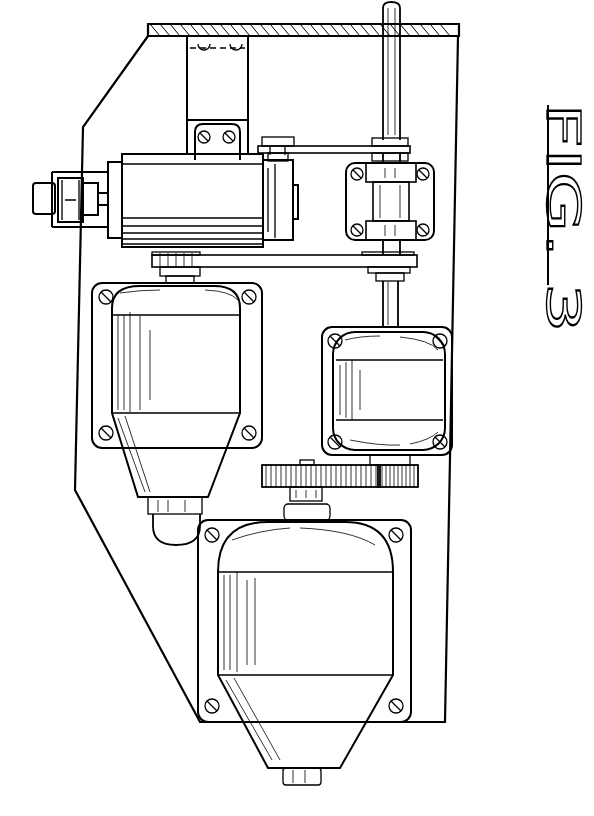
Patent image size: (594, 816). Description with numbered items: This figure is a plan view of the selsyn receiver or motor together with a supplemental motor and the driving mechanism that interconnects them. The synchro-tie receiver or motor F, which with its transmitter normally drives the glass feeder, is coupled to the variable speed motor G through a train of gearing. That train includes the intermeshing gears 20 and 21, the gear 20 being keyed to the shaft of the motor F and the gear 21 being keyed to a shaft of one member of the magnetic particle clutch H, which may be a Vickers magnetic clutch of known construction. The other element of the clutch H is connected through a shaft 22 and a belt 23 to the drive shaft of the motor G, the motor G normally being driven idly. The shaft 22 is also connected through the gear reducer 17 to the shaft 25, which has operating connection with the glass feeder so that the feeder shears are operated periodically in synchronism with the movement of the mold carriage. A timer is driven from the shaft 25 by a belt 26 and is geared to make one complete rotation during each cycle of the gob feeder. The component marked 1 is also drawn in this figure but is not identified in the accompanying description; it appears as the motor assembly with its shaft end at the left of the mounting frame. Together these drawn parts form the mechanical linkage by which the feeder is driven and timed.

The motor 1 is at (36, 214).
The gear reducer 17 is at (405, 200).
The gear 20 is at (286, 465).
The gear 21 is at (412, 487).
The shaft 22 is at (392, 300).
The belt 23 is at (306, 266).
The shaft 25 is at (398, 96).
The belt 26 is at (333, 145).
The variable speed motor G is at (177, 414).
The magnetic particle clutch H is at (387, 396).
The synchro-tie receiver or motor F is at (304, 652).